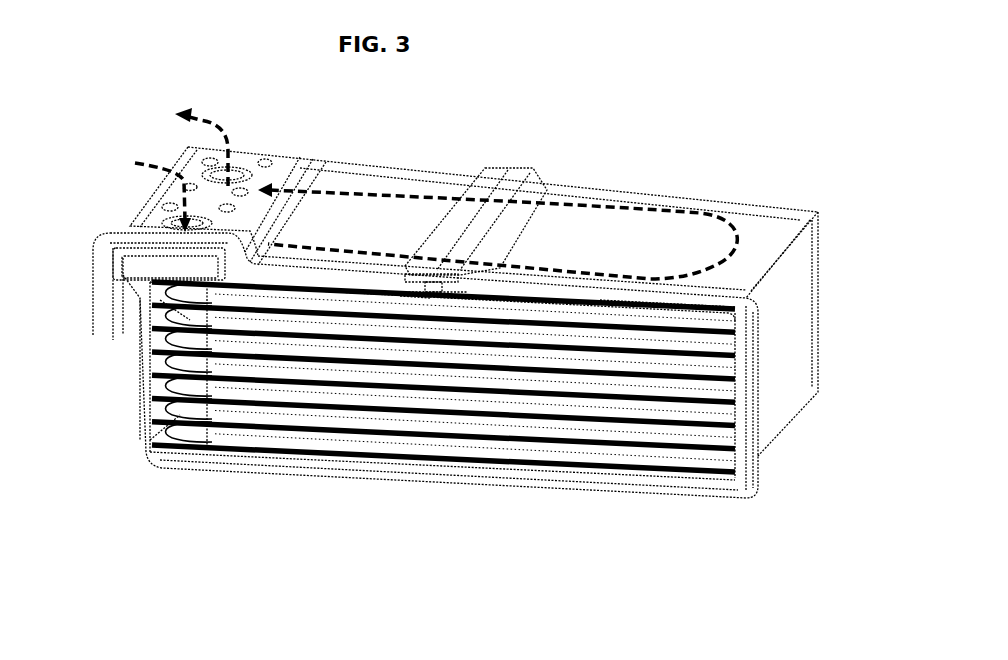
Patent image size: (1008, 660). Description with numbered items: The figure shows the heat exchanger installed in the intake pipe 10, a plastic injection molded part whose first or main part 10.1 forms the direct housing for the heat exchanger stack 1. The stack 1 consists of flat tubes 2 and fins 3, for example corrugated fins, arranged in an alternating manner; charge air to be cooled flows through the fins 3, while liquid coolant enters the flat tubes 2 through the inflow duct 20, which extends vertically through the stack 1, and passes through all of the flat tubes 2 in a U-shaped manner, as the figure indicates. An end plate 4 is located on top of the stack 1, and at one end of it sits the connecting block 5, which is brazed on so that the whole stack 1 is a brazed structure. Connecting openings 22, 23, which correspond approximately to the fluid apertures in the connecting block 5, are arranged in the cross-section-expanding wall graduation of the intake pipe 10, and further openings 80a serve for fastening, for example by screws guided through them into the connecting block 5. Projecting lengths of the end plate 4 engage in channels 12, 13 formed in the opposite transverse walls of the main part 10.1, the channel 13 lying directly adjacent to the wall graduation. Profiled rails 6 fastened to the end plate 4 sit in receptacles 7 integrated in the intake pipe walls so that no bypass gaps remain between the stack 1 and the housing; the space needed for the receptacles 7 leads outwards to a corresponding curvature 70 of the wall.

The stack 1 is at (500, 462).
The flat tubes 2 is at (318, 402).
The fins 3 is at (583, 407).
The end plate 4 is at (623, 310).
The connecting block 5 is at (160, 264).
The profiled rails 6 is at (430, 288).
The receptacles 7 is at (422, 290).
The intake pipe 10 is at (690, 88).
The first part 10.1 is at (797, 383).
The channel 12 is at (737, 335).
The channel 13 is at (127, 293).
The inflow duct 20 is at (193, 388).
The connecting opening 22 is at (207, 177).
The connecting opening 23 is at (166, 223).
The curvature 70 is at (507, 180).
The openings 80a is at (262, 160).